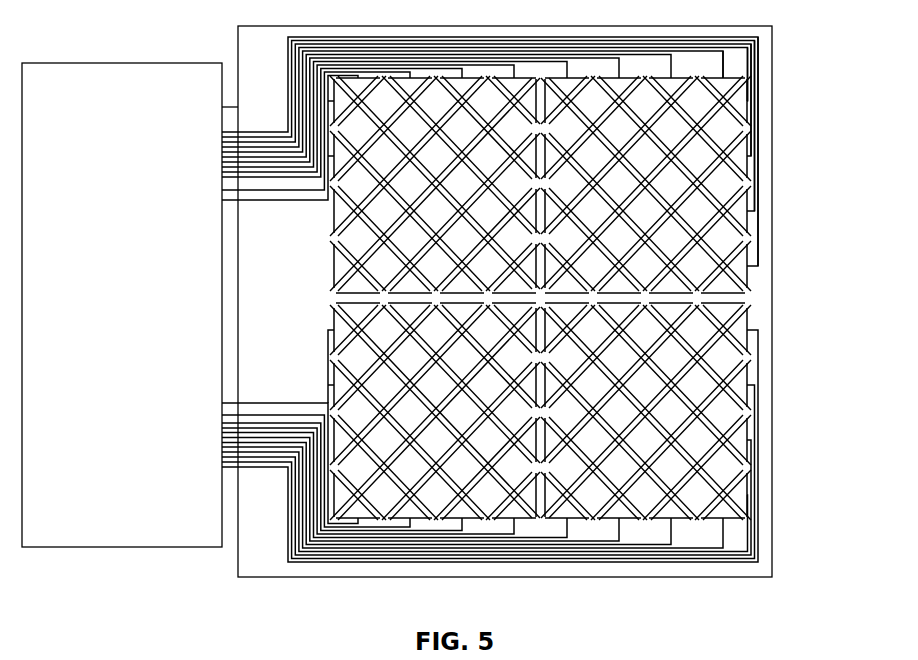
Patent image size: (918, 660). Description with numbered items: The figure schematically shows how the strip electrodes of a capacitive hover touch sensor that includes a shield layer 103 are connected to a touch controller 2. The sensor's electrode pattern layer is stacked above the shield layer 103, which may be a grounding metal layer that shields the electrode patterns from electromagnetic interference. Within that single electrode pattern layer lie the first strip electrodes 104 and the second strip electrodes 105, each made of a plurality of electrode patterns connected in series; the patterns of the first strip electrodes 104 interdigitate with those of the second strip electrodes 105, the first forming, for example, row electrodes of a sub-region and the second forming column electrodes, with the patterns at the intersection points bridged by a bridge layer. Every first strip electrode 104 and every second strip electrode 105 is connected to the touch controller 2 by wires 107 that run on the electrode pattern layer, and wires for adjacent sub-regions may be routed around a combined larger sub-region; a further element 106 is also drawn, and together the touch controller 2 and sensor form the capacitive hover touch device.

The touch controller 2 is at (130, 305).
The shield layer 103 is at (770, 301).
The first strip electrodes 104 is at (753, 104).
The second strip electrodes 105 is at (728, 80).
The sensing electrodes (diamond mesh) 106 is at (728, 165).
The wires 107 is at (272, 210).